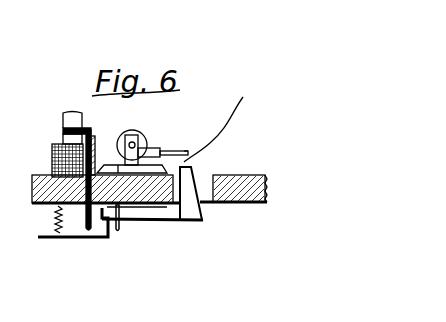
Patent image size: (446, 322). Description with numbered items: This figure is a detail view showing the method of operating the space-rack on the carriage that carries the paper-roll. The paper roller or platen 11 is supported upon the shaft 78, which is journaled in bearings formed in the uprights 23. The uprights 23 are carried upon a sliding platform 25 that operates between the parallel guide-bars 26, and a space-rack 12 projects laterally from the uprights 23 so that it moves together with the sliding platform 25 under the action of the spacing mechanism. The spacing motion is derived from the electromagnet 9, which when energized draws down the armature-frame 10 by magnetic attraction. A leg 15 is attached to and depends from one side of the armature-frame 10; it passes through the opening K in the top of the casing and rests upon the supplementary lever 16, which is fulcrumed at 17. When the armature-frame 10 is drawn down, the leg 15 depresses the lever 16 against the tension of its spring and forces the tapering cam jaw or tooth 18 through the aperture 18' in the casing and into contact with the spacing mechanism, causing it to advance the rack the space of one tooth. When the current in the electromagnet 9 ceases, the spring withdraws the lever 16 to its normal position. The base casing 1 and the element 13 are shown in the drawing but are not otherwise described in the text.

The base plate 1 is at (49, 224).
The electromagnet 9 is at (52, 157).
The armature-frame 10 is at (63, 130).
The paper roller or platen 11 is at (139, 133).
The space-rack 12 is at (158, 148).
The arm tip 13 is at (184, 151).
The leg 15 is at (89, 130).
The supplementary lever 16 is at (92, 240).
The fulcrum 17 is at (126, 227).
The tapering cam jaw or tooth 18 is at (167, 219).
The aperture 18' is at (183, 213).
The uprights 23 is at (119, 150).
The sliding platform 25 is at (148, 174).
The parallel guide-bars 26 is at (222, 124).
The shaft 78 is at (189, 104).
The opening K is at (53, 208).